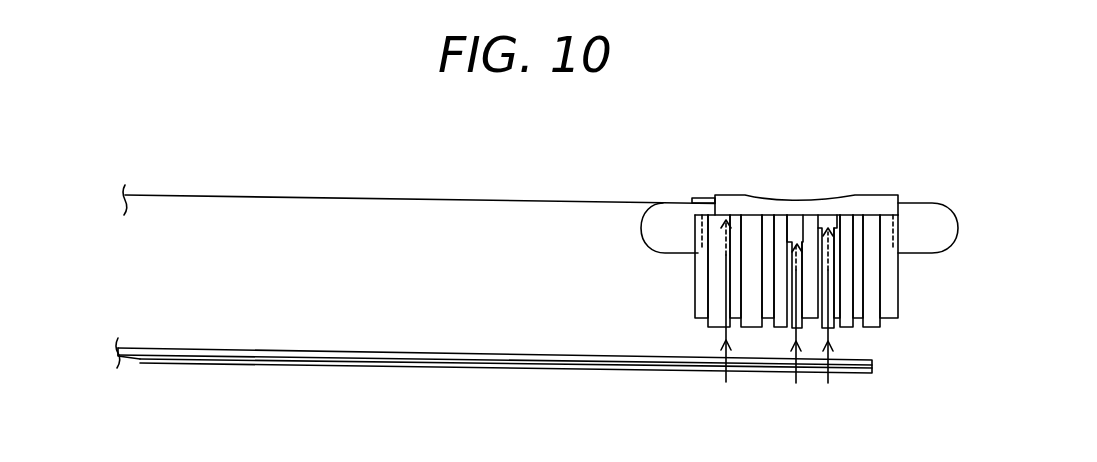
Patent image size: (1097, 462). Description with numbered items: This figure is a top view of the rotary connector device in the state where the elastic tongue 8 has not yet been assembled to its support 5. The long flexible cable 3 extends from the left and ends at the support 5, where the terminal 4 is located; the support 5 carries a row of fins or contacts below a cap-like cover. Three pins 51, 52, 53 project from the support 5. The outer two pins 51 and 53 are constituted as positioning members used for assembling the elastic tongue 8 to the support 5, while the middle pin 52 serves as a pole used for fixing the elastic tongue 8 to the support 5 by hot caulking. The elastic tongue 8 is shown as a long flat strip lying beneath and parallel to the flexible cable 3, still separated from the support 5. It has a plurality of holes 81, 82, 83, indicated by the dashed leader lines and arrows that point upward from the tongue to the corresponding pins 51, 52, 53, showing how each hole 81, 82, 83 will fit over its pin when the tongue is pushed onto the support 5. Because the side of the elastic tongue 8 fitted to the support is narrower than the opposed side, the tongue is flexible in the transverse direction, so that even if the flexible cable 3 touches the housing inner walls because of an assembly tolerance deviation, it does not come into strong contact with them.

The flexible cable 3 is at (405, 201).
The terminal 4 is at (837, 328).
The support 5 is at (886, 202).
The elastic tongue 8 is at (331, 367).
The pin 51 is at (727, 221).
The pin 52 is at (798, 228).
The pin 53 is at (830, 217).
The hole 81 is at (722, 380).
The hole 82 is at (794, 385).
The hole 83 is at (832, 385).